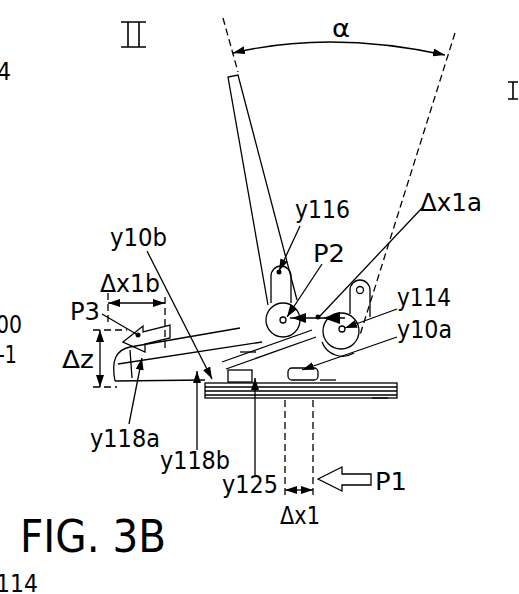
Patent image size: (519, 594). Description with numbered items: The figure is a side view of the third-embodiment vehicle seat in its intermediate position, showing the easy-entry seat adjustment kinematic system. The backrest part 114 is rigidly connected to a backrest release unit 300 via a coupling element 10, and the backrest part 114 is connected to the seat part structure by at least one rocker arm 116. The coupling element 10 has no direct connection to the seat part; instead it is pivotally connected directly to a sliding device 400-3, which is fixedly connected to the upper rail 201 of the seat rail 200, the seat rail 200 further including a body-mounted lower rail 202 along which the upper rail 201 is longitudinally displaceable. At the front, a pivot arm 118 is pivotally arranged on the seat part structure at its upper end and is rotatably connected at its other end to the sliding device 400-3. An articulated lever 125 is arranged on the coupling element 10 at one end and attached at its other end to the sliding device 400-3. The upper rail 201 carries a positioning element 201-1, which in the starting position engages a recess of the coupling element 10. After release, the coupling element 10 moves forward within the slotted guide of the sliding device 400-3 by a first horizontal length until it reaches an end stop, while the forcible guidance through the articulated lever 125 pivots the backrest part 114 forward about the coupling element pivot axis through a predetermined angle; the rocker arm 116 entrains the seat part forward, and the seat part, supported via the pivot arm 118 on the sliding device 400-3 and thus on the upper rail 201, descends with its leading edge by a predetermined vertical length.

The backrest part 114 is at (226, 38).
The backrest release unit 300 is at (265, 306).
The rocker arm 116 is at (206, 340).
The coupling element 10 is at (274, 371).
The sliding device 400-3 is at (248, 357).
The pivot arm 118 is at (166, 364).
The articulated lever 125 is at (241, 379).
The upper rail 201 is at (343, 382).
The positioning element 201-1 is at (328, 376).
The seat rail 200 is at (401, 390).
The lower rail 202 is at (380, 395).